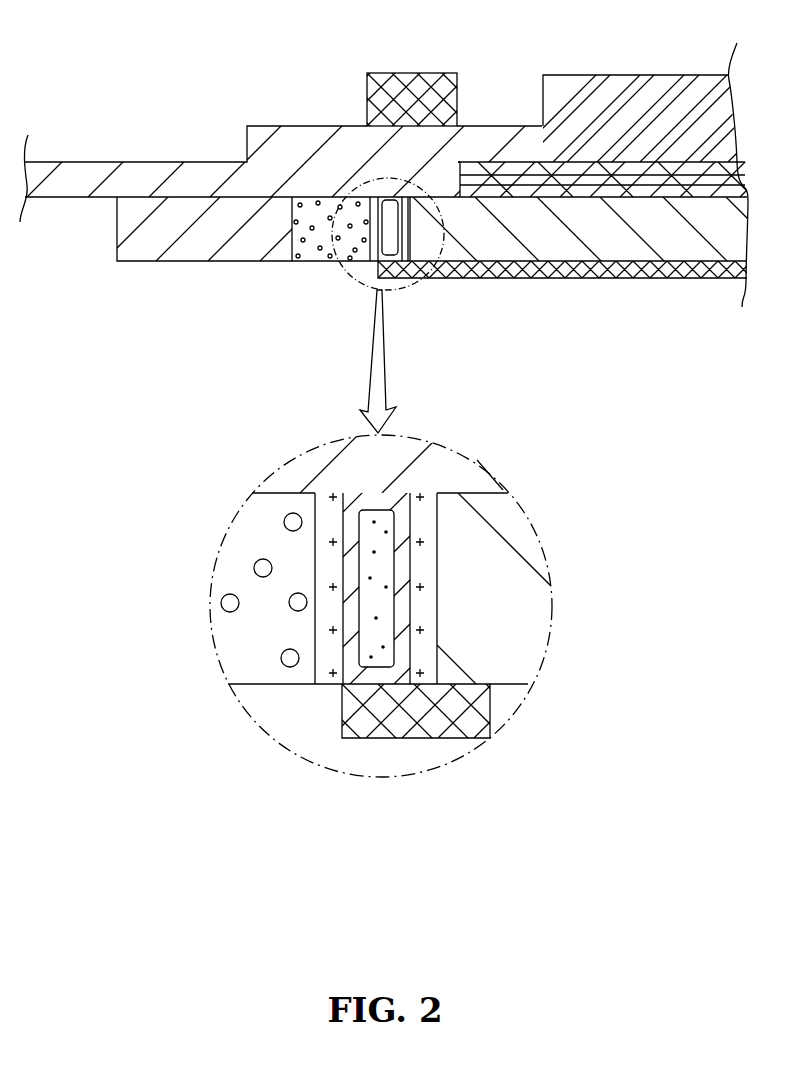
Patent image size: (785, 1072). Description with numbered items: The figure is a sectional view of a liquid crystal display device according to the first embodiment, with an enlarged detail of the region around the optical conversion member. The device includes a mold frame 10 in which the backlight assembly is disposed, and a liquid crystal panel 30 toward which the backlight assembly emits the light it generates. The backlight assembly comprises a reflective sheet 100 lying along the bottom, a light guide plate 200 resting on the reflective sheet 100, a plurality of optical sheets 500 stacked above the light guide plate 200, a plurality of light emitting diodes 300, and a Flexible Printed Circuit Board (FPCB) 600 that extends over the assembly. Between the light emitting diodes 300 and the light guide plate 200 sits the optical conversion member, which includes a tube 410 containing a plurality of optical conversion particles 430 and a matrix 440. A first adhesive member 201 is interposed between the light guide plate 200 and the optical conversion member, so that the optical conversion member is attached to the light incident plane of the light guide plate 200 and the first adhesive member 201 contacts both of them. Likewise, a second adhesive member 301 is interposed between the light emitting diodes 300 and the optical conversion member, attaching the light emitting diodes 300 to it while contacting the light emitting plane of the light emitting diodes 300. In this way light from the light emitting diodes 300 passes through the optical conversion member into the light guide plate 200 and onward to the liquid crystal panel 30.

The mold frame 10 is at (161, 245).
The liquid crystal panel 30 is at (633, 87).
The reflective sheet 100 is at (476, 278).
The light guide plate 200 is at (561, 240).
The first adhesive member 201 is at (437, 647).
The light emitting diodes 300 is at (313, 250).
The second adhesive member 301 is at (328, 687).
The tube 410 is at (396, 600).
The optical conversion particles 430 is at (430, 492).
The matrix 440 is at (316, 492).
The optical sheets 500 is at (647, 198).
The Flexible Printed Circuit Board (FPCB) 600 is at (166, 177).